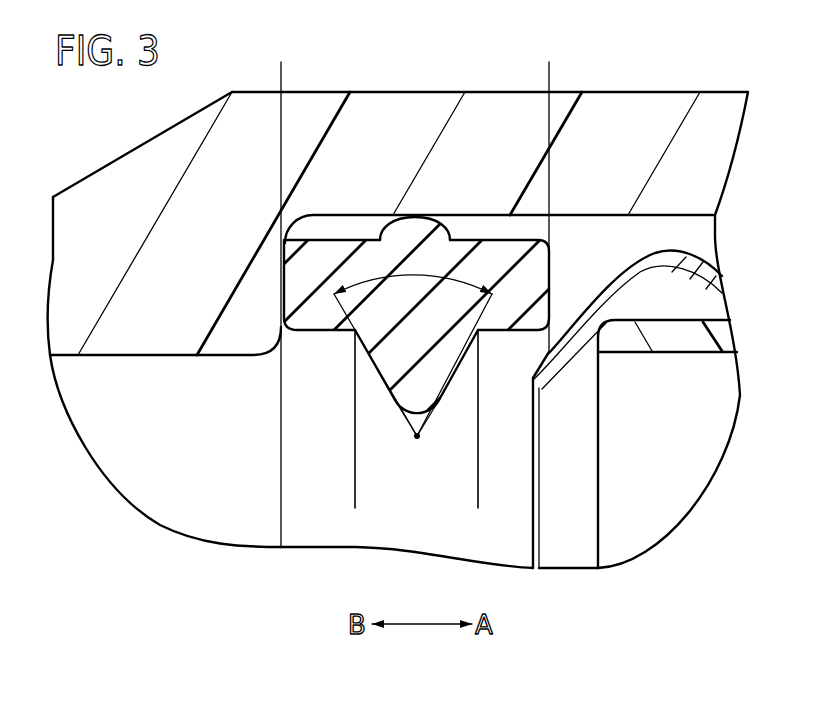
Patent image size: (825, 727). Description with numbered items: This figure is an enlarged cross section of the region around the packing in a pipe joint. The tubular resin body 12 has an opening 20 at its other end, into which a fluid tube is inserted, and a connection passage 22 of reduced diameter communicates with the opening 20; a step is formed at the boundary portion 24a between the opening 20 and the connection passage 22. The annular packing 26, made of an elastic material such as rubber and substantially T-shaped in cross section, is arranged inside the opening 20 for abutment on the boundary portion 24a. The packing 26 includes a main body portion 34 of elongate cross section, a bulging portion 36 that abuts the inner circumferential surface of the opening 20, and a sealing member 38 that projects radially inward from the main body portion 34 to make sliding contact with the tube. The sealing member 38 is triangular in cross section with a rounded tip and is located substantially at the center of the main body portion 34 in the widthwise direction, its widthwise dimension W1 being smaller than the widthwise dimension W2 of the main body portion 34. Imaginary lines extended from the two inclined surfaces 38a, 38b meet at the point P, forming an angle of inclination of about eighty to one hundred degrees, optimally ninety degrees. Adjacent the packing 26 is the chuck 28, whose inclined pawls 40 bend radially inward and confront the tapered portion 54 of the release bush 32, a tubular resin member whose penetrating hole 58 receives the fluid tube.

The body 12 is at (689, 71).
The opening 20 is at (693, 216).
The connection passage 22 is at (158, 357).
The boundary portion 24a is at (283, 298).
The packing 26 is at (474, 228).
The chuck 28 is at (724, 282).
The release bush 32 is at (739, 335).
The main body portion 34 is at (537, 262).
The bulging portion 36 is at (411, 223).
The sealing member 38 is at (415, 392).
The inclined surface 38a is at (452, 373).
The inclined surface 38b is at (380, 373).
The inclined pawls 40 is at (551, 381).
The tapered portion 54 is at (690, 340).
The penetrating hole 58 is at (672, 353).
The point P is at (417, 437).
The widthwise dimension W1 is at (478, 504).
The widthwise dimension W2 is at (281, 62).